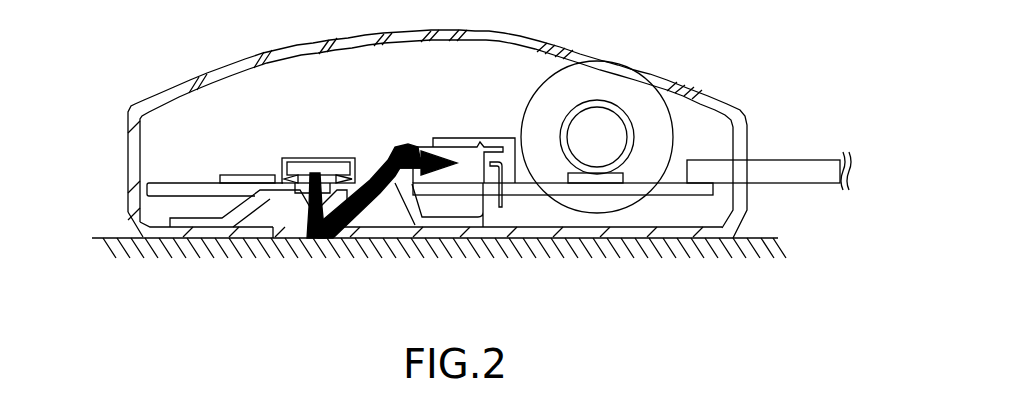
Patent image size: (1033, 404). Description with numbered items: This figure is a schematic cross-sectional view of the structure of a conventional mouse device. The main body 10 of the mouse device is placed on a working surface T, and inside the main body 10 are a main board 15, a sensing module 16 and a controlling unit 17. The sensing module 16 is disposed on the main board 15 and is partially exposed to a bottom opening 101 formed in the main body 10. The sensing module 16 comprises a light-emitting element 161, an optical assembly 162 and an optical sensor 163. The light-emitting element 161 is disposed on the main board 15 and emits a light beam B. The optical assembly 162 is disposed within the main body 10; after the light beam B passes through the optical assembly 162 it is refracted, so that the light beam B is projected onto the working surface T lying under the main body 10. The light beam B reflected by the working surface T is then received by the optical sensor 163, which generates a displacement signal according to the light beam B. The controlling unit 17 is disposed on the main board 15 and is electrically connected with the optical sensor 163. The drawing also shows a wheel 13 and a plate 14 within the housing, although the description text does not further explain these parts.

The main body 10 is at (737, 153).
The wheel 13 is at (608, 75).
The plate 14 is at (792, 190).
The main board 15 is at (655, 190).
The sensing module 16 is at (448, 129).
The light-emitting element 161 is at (470, 147).
The optical assembly 162 is at (355, 228).
The optical sensor 163 is at (320, 165).
The controlling unit 17 is at (243, 173).
The bottom opening 101 is at (297, 240).
The working surface T is at (110, 235).
The light beam B is at (410, 150).